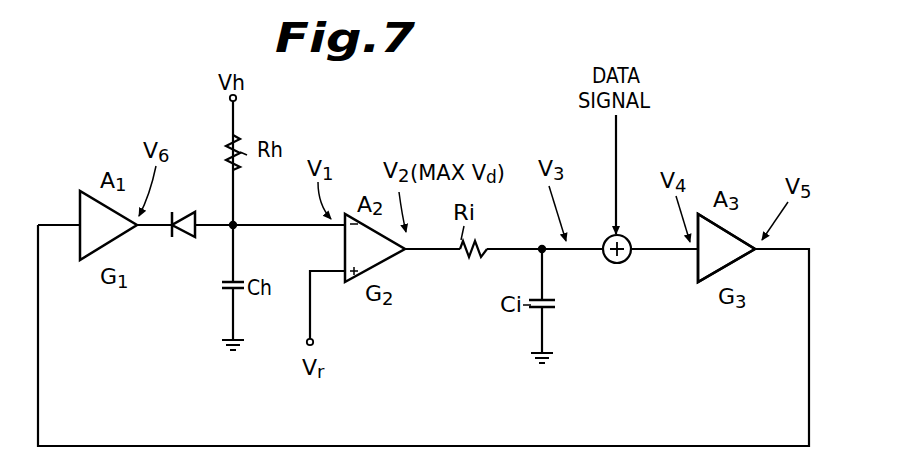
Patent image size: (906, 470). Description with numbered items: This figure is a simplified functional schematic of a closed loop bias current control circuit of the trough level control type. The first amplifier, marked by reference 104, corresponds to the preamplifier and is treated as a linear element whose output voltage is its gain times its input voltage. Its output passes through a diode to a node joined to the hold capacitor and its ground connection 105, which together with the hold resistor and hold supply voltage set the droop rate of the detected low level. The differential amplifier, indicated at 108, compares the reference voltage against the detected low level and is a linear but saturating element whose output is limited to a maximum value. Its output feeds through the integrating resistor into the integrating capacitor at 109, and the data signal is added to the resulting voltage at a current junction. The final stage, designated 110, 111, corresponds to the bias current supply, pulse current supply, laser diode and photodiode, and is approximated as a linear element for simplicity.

The amplifier A1 (gain stage G1) 104 is at (100, 293).
The hold capacitor Ch to ground 105 is at (228, 352).
The comparator amplifier A2 (G2) 108 is at (363, 310).
The integrating capacitor Ci 109 is at (520, 328).
The output amplifier A3 (G3) 110 is at (708, 312).
The output amplifier A3 (G3) 111 is at (708, 312).